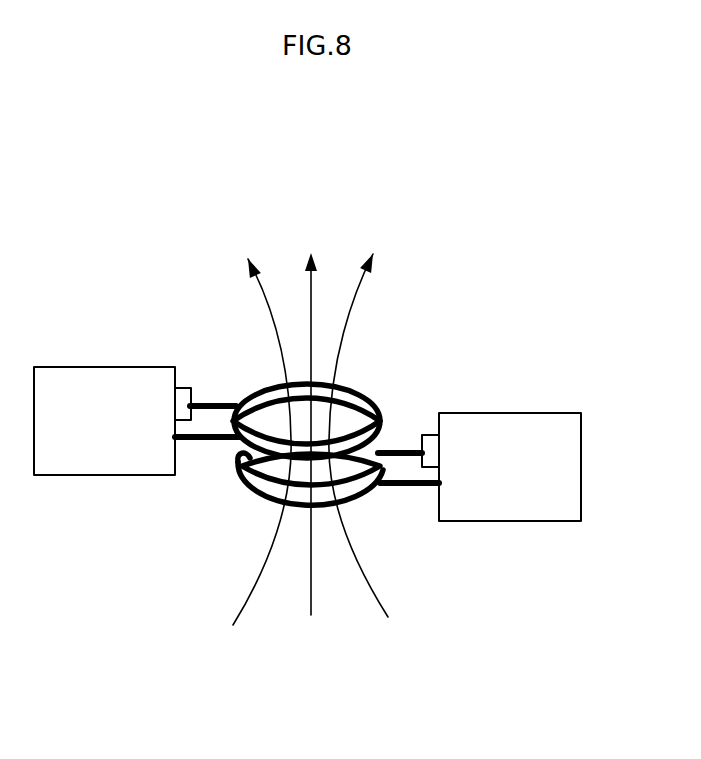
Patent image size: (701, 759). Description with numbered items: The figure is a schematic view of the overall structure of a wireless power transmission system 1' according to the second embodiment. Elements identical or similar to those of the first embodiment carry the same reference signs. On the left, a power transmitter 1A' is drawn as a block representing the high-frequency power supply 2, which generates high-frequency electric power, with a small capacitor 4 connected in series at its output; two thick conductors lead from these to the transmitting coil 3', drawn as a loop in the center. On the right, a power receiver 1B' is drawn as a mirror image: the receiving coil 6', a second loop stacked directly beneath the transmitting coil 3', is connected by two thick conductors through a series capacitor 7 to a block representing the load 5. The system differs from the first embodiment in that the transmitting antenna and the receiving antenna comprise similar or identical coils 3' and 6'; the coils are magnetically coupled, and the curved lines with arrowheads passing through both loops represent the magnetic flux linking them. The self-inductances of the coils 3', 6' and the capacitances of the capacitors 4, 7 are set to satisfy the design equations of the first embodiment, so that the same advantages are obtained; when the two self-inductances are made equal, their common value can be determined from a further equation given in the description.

The wireless power transmission system 1' is at (310, 401).
The power transmitter 1A' is at (207, 377).
The high-frequency power supply 2 is at (155, 367).
The capacitor 4 is at (183, 388).
The coil 3' is at (277, 390).
The power receiver 1B' is at (409, 418).
The coil 6' is at (338, 430).
The capacitor 7 is at (432, 435).
The load 5 is at (462, 413).